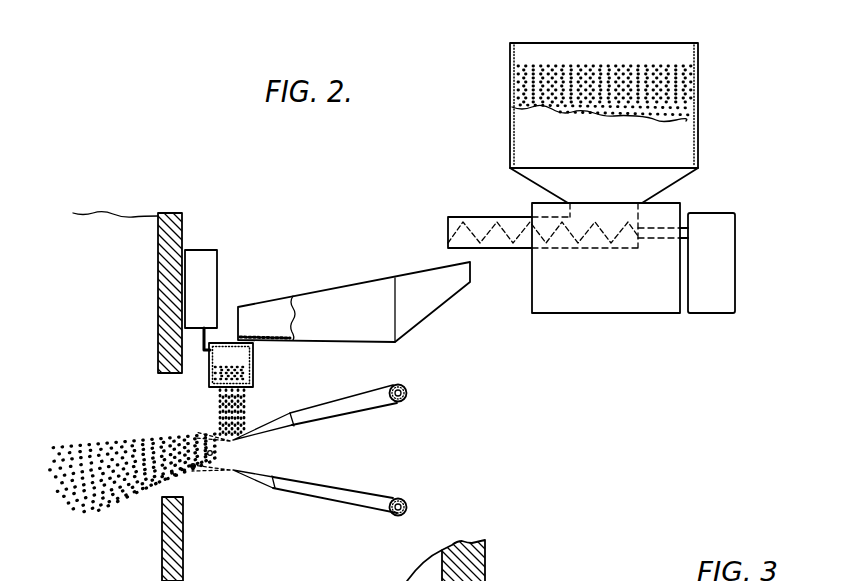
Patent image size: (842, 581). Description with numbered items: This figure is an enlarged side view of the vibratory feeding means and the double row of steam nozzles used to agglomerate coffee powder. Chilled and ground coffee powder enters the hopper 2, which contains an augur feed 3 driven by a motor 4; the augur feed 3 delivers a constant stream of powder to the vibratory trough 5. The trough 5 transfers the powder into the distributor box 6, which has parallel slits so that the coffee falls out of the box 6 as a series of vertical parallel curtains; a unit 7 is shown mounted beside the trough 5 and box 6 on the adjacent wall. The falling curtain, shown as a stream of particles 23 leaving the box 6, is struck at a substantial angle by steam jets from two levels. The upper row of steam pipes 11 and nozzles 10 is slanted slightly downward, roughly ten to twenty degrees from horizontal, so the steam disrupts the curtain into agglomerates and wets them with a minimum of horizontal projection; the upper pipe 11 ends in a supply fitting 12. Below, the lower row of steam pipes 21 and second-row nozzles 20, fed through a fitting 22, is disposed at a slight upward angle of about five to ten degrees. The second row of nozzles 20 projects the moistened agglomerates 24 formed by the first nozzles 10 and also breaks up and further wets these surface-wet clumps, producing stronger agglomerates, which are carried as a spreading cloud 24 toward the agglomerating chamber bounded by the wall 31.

The hopper 2 is at (688, 148).
The augur feed 3 is at (470, 230).
The motor 4 is at (730, 257).
The vibratory trough 5 is at (437, 302).
The distributor box 6 is at (255, 360).
The vibrator unit 7 is at (212, 278).
The upper row of steam nozzles 10 is at (292, 428).
The upper row of steam pipes 11 is at (358, 400).
The upper nozzle supply connection 12 is at (406, 397).
The second row of steam nozzles 20 is at (265, 485).
The lower row of steam pipes 21 is at (347, 502).
The lower nozzle supply connection 22 is at (407, 509).
The falling particles 23 is at (243, 402).
The moistened agglomerates 24 is at (112, 438).
The target wall 31 is at (185, 562).